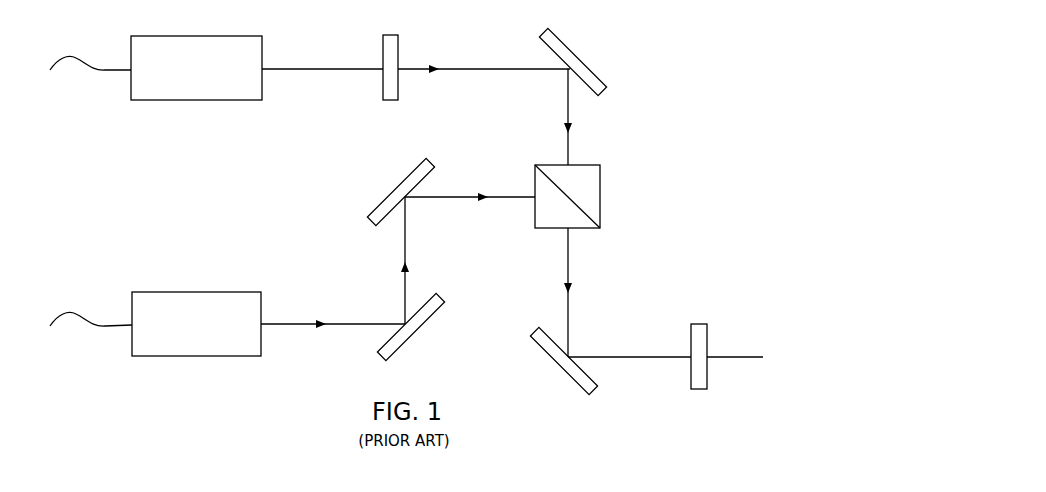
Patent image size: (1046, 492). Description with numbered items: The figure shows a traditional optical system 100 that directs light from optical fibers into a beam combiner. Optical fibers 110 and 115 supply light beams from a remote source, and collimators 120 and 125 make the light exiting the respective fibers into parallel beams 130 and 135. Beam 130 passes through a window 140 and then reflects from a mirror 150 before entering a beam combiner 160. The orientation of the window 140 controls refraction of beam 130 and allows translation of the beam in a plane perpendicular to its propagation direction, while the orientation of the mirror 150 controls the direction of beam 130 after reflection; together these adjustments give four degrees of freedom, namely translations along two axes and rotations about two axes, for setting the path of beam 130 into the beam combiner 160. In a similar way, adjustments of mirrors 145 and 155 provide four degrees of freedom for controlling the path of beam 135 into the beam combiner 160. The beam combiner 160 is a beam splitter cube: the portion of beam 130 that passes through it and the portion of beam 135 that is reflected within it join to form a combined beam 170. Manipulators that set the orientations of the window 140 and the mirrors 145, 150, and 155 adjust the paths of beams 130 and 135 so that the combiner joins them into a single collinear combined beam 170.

The optical system 100 is at (407, 205).
The optical fiber 110 is at (70, 60).
The optical fiber 115 is at (78, 310).
The collimator 120 is at (196, 68).
The collimator 125 is at (196, 324).
The beam 130 is at (292, 67).
The beam 135 is at (293, 323).
The window 140 is at (390, 100).
The mirror 145 is at (410, 340).
The mirror 150 is at (583, 63).
The mirror 155 is at (391, 196).
The beam combiner 160 is at (585, 164).
The combined beam 170 is at (569, 309).